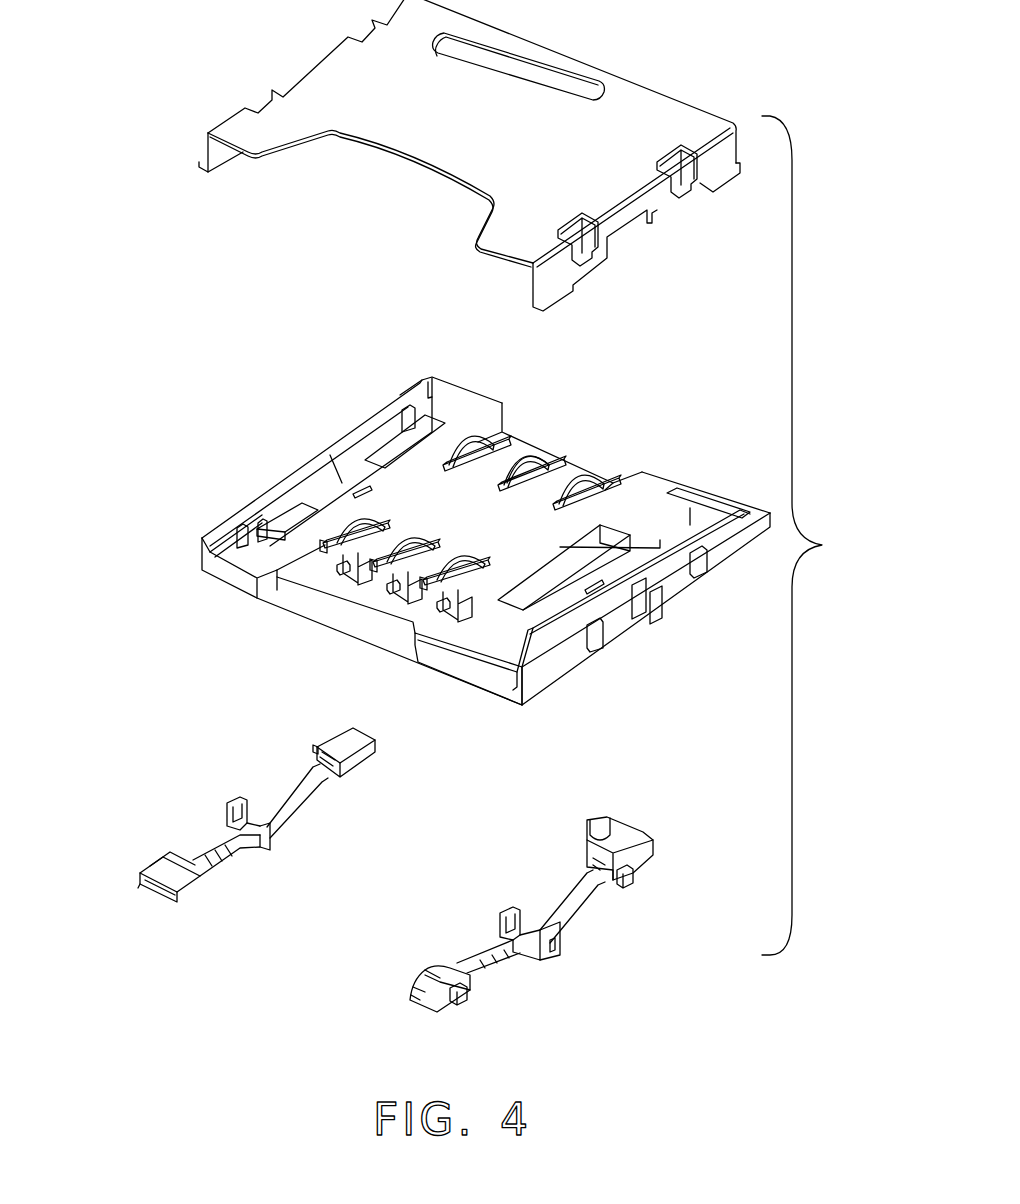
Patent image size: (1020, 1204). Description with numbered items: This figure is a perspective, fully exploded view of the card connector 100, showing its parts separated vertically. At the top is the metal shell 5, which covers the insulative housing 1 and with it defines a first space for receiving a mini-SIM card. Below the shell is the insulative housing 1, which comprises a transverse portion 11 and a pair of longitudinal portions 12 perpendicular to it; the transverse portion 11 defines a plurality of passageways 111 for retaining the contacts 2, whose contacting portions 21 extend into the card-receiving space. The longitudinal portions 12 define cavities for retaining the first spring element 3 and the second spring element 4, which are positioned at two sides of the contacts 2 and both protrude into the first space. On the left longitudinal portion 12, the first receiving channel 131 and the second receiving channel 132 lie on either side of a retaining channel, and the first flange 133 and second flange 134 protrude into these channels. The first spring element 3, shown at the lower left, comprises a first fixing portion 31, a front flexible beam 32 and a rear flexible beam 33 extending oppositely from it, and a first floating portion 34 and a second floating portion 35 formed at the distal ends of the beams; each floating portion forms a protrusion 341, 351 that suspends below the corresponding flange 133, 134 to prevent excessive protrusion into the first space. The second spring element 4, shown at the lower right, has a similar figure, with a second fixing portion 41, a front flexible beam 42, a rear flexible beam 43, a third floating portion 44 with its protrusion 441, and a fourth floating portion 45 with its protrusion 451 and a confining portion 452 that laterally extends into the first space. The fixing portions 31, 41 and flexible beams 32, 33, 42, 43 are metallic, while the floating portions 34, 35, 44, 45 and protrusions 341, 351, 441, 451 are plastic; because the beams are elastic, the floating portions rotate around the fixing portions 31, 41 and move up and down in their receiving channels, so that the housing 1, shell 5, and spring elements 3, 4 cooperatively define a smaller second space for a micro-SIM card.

The card connector 100 is at (818, 535).
The insulative housing 1 is at (662, 478).
The transverse portion 11 is at (528, 542).
The passageways 111 is at (425, 600).
The longitudinal portions 12 is at (342, 483).
The first receiving channel 131 is at (275, 543).
The second receiving channel 132 is at (412, 420).
The first flange 133 is at (238, 527).
The second flange 134 is at (392, 410).
The contacts 2 is at (572, 487).
The contacting portion 21 is at (523, 450).
The first spring element 3 is at (218, 804).
The first fixing portion 31 is at (277, 837).
The front flexible beam 32 is at (207, 857).
The rear flexible beam 33 is at (297, 792).
The first floating portion 34 is at (157, 885).
The protrusion 341 is at (157, 867).
The second floating portion 35 is at (352, 742).
The protrusion 351 is at (317, 743).
The second spring element 4 is at (541, 904).
The second fixing portion 41 is at (553, 947).
The front flexible beam 42 is at (497, 967).
The rear flexible beam 43 is at (563, 900).
The third floating portion 44 is at (437, 972).
The protrusion 441 is at (463, 993).
The fourth floating portion 45 is at (623, 847).
The protrusion 451 is at (630, 880).
The confining portion 452 is at (600, 822).
The metal shell 5 is at (288, 46).